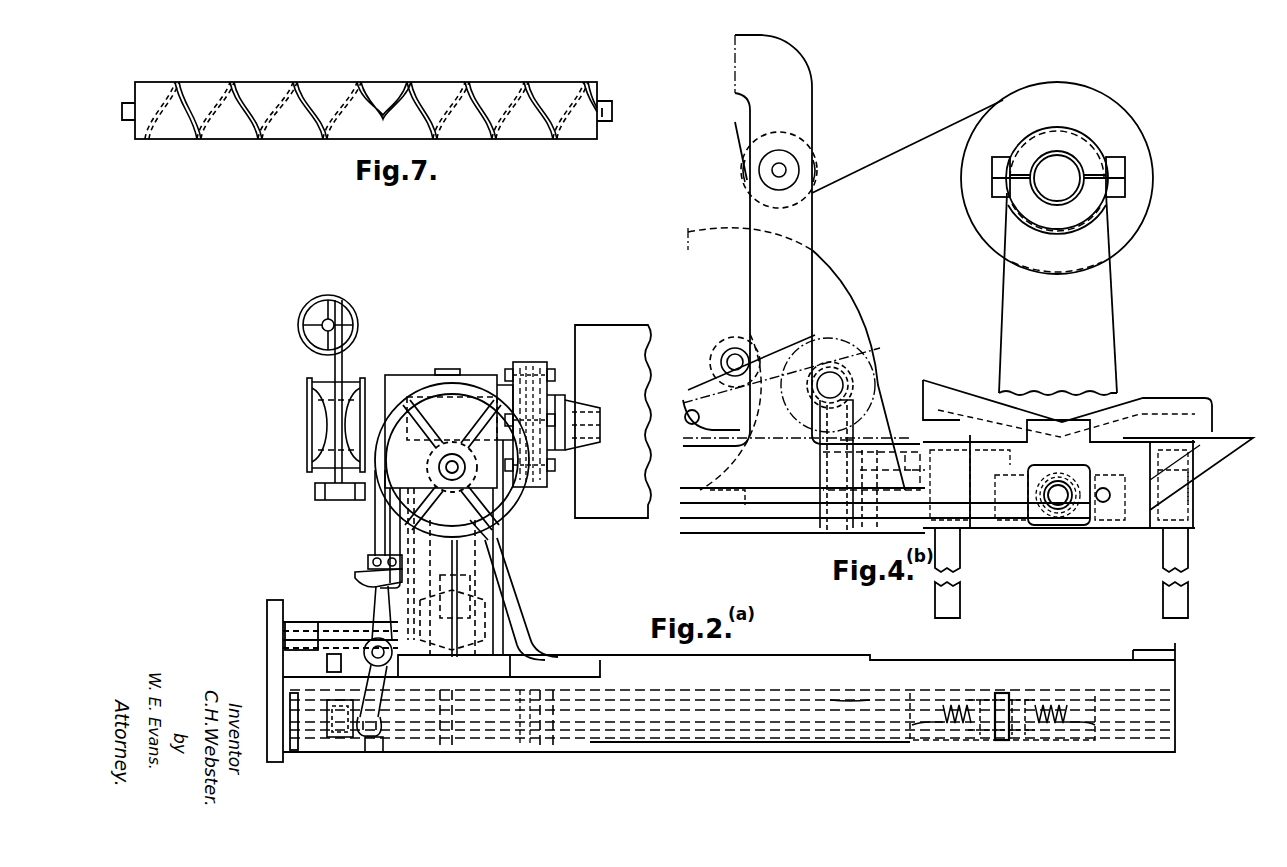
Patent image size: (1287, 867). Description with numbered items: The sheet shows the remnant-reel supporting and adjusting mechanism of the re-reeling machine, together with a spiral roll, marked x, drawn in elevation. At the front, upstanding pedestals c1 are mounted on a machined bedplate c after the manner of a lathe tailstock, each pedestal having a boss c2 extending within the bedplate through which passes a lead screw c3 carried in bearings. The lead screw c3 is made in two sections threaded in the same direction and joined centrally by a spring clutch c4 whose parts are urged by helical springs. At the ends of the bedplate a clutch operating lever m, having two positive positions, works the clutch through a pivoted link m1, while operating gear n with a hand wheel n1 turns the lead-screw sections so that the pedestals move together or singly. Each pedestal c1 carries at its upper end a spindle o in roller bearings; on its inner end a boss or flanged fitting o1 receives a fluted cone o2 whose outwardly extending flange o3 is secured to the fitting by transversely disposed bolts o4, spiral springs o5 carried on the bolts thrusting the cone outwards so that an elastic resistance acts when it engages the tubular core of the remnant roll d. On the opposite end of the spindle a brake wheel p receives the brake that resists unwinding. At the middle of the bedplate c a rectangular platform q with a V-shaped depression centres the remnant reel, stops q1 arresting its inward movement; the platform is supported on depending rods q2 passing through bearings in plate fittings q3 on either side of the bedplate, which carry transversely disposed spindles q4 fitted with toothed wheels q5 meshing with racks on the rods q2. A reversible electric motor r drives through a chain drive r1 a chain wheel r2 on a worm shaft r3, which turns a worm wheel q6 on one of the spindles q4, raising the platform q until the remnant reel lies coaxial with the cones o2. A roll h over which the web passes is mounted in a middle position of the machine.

In FIG. 7, the screw roller shaft end x is at (604, 118).
In FIG. 2A, the brake wheel p is at (310, 404).
In FIG. 2A, the spindle o is at (443, 412).
In FIG. 2A, the boss or flanged fitting o1 is at (560, 395).
In FIG. 2A, the cone o2 is at (575, 442).
In FIG. 2A, the flange of the cone o3 is at (540, 488).
In FIG. 2A, the bolts o4 is at (535, 375).
In FIG. 2A, the spiral springs o5 is at (527, 372).
In FIG. 2A, the remnant roll d is at (625, 340).
In FIG. 4B, the remnant roll d is at (1075, 97).
In FIG. 2A, the clutch operating lever m is at (375, 610).
In FIG. 2A, the pivoted link m1 is at (392, 742).
In FIG. 2A, the operating gear n is at (275, 735).
In FIG. 2A, the hand wheel n1 is at (495, 533).
In FIG. 2A, the bedplate c is at (1135, 712).
In FIG. 2A, the pedestal c1 is at (530, 608).
In FIG. 2A, the boss c2 is at (517, 750).
In FIG. 2A, the lead screw c3 is at (850, 728).
In FIG. 2A, the spring clutch c4 is at (1003, 742).
In FIG. 4B, the roll h is at (748, 184).
In FIG. 4B, the reversible electric motor r is at (735, 458).
In FIG. 4B, the chain drive r1 is at (776, 355).
In FIG. 4B, the chain wheel r2 is at (866, 372).
In FIG. 4B, the worm shaft r3 is at (830, 372).
In FIG. 4B, the platform q is at (1137, 398).
In FIG. 4B, the stops or projections q1 is at (943, 386).
In FIG. 4B, the depending rods q2 is at (950, 548).
In FIG. 4B, the plate fittings q3 is at (1175, 518).
In FIG. 4B, the transversely disposed spindles q4 is at (1215, 458).
In FIG. 4B, the toothed wheels q5 is at (1203, 492).
In FIG. 4B, the worm wheel q6 is at (838, 506).